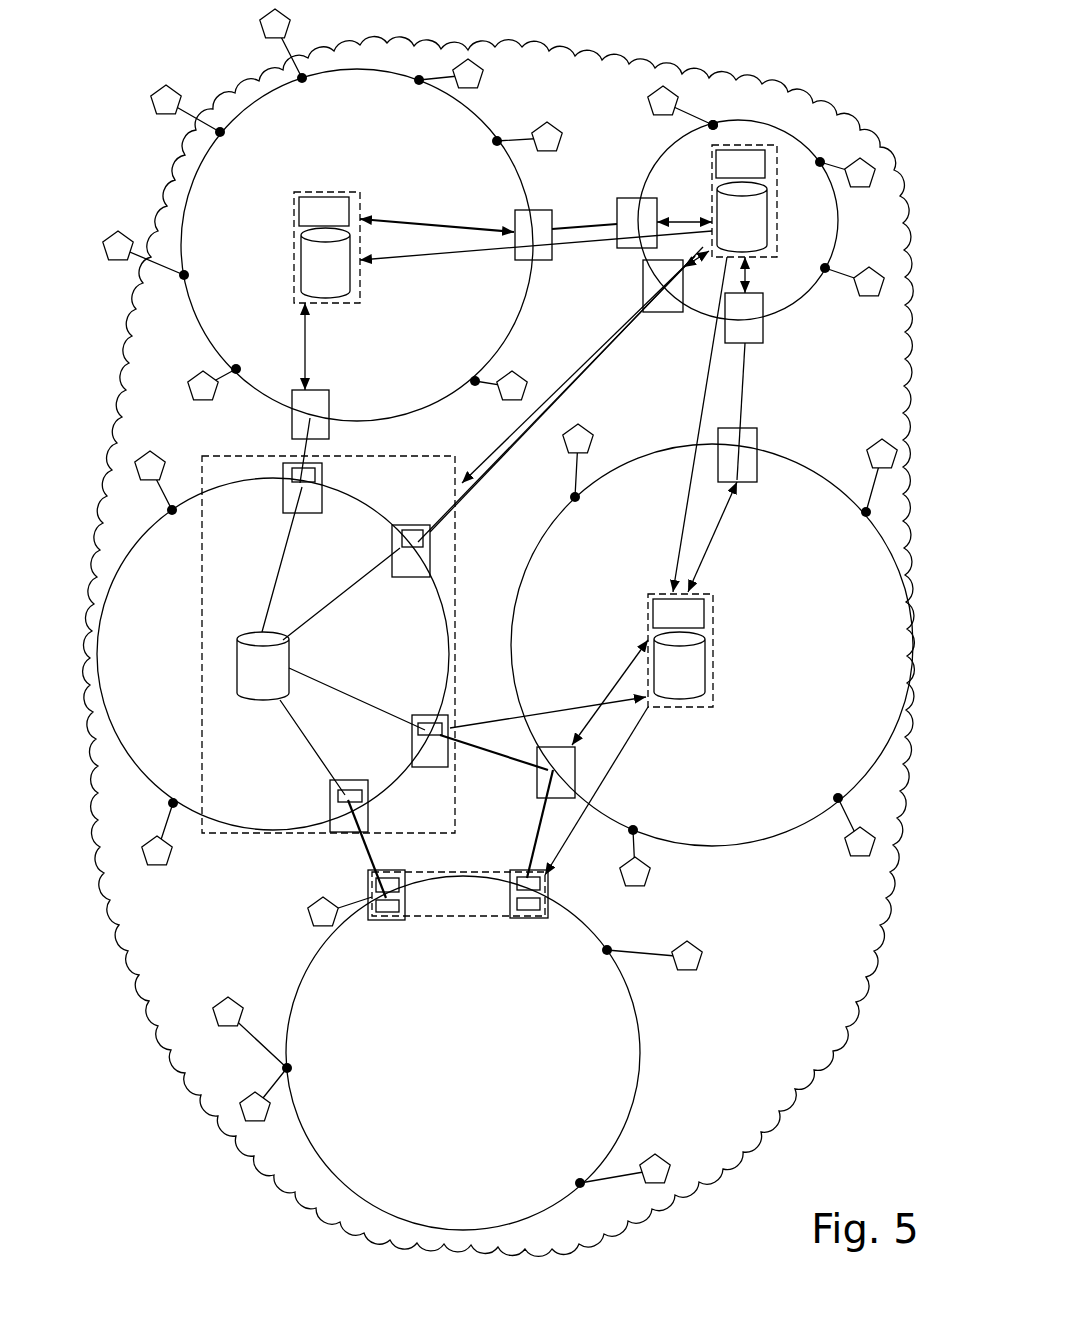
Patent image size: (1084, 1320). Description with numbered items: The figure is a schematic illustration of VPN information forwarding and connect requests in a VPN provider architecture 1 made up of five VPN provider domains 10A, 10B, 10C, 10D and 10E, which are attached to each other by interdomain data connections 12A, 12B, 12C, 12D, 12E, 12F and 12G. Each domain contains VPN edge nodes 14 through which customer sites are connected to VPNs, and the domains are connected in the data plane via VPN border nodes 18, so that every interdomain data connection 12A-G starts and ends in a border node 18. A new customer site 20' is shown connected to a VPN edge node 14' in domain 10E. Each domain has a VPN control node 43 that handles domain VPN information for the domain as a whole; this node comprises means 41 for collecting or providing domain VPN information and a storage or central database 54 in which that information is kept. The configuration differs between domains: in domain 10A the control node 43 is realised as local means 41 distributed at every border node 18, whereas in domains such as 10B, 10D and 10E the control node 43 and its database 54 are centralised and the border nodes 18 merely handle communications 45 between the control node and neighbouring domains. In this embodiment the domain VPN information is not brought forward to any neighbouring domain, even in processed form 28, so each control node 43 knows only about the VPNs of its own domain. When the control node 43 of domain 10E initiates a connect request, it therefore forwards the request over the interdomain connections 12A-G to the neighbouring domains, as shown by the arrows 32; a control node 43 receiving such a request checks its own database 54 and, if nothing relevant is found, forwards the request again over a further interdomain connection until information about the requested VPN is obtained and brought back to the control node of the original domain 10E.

The VPN provider architecture 1 is at (793, 1087).
The VPN provider domain 10A is at (636, 1053).
The VPN provider domain 10B is at (772, 848).
The VPN provider domain 10C is at (228, 830).
The VPN provider domain 10D is at (410, 415).
The VPN provider domain 10E is at (820, 290).
The interdomain data connection 12A is at (528, 870).
The interdomain data connection 12B is at (385, 882).
The interdomain data connection 12C is at (537, 762).
The interdomain data connection 12D is at (748, 360).
The interdomain data connection 12E is at (500, 480).
The interdomain data connection 12F is at (290, 456).
The interdomain data connection 12G is at (617, 215).
The VPN edge node 14 is at (500, 598).
The VPN edge node 14' is at (727, 89).
The VPN border node 18 is at (330, 420).
The customer site 20' is at (622, 100).
The processed VPN information 28 is at (495, 722).
The forwarded connect request 32 is at (460, 247).
The means for collecting domain VPN information 41 is at (318, 197).
The VPN control node 43 is at (350, 304).
The communications 45 is at (410, 215).
The storage / central database 54 is at (352, 265).